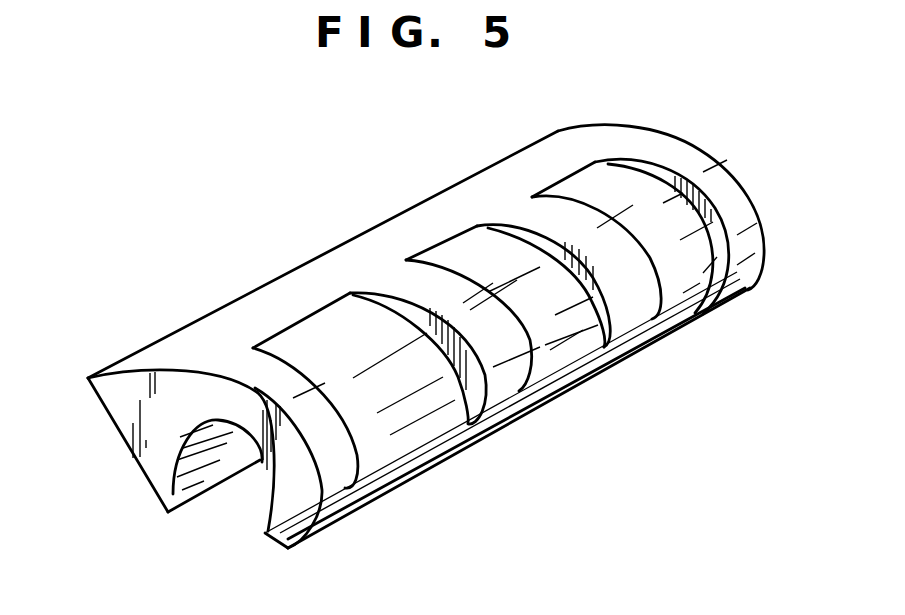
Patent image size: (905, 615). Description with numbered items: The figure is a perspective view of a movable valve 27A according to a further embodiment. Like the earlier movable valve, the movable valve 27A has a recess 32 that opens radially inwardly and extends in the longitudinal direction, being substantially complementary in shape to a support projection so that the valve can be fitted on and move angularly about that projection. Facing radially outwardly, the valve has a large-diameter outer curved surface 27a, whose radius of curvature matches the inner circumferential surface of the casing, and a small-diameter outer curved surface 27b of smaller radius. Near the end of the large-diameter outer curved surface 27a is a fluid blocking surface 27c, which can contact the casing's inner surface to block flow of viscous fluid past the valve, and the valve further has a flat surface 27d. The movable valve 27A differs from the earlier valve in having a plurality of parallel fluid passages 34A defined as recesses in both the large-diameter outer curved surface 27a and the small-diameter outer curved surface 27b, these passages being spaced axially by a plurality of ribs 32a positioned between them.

The movable valve 27A is at (594, 125).
The large-diameter outer curved surface 27a is at (180, 364).
The small-diameter outer curved surface 27b is at (359, 477).
The fluid blocking surface 27c is at (274, 293).
The flat surface 27d is at (104, 411).
The recess 32 is at (253, 495).
The ribs 32a is at (632, 300).
The fluid passages 34A is at (480, 253).